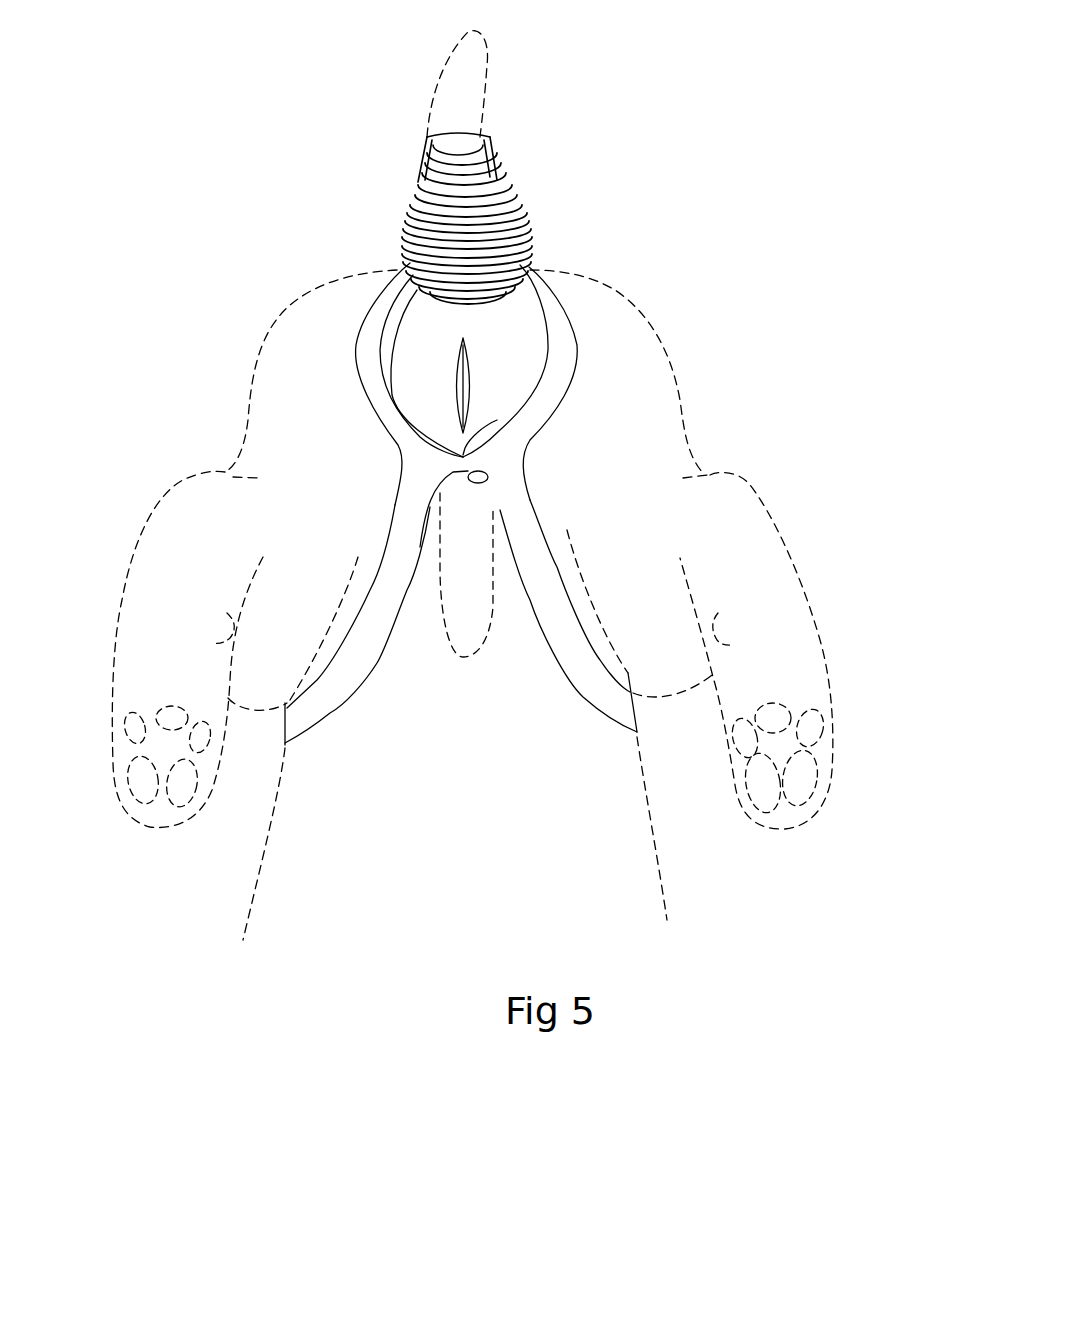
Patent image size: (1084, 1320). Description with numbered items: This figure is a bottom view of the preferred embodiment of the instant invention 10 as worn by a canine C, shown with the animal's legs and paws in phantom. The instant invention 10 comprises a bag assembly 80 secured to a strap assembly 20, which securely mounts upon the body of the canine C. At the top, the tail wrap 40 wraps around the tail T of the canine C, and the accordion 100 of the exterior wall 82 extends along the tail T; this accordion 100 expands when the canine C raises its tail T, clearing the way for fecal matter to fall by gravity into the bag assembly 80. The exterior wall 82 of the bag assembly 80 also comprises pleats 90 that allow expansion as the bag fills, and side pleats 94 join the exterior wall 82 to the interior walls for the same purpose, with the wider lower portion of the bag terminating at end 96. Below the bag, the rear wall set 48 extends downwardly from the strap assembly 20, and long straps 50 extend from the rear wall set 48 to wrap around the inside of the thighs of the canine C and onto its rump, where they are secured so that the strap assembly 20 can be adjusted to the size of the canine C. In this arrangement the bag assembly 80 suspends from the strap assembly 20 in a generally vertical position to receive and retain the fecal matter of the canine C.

The tail T is at (487, 70).
The tail wrap 40 is at (473, 133).
The accordion 100 is at (497, 203).
The instant invention 10 is at (635, 224).
The pleats 90 is at (460, 363).
The side pleats 94 is at (397, 350).
The exterior wall 82 is at (418, 390).
The strap assembly 20 is at (328, 390).
The bag assembly 80 is at (560, 355).
The end 96 is at (497, 420).
The rear wall set 48 is at (488, 482).
The canine C is at (780, 492).
The long straps 50 is at (355, 667).